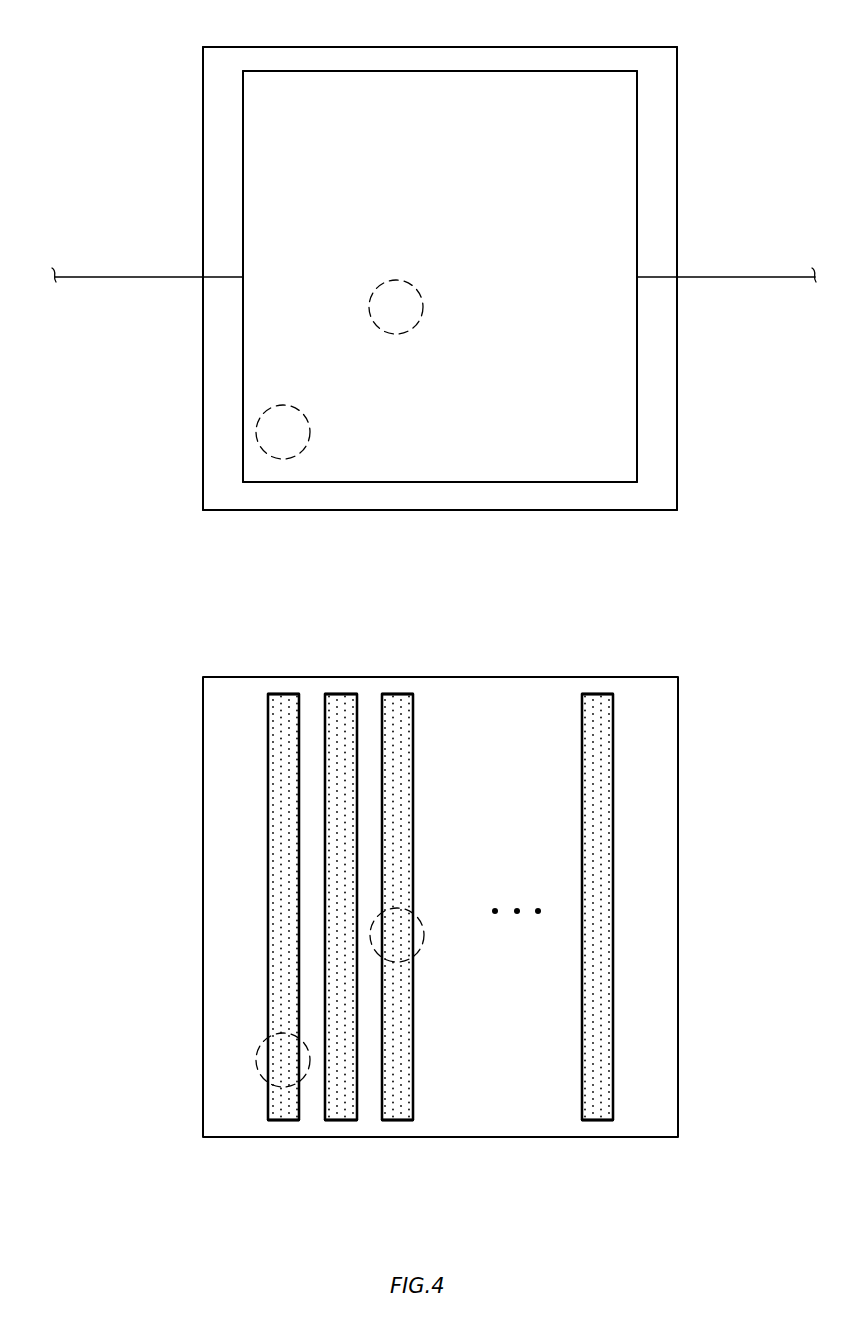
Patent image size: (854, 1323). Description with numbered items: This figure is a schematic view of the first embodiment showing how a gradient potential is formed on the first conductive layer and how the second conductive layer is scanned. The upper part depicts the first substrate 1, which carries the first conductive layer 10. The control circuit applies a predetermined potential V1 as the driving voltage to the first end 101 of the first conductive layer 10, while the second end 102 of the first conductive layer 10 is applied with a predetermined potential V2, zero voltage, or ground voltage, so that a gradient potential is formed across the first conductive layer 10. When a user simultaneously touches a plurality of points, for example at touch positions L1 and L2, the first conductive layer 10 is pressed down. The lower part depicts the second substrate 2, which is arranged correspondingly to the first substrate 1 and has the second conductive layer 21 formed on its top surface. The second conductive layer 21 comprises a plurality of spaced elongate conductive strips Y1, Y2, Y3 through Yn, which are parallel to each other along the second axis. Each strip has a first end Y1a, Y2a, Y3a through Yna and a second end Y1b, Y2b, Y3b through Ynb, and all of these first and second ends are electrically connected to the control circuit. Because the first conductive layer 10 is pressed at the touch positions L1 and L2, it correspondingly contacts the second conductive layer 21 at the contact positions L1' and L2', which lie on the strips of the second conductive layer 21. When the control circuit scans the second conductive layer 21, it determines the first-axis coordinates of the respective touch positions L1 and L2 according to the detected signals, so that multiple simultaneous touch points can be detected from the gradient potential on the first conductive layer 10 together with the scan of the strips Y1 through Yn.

The first substrate 1 is at (660, 62).
The first conductive layer 10 is at (441, 86).
The first end of the first conductive layer 101 is at (637, 168).
The second end of the first conductive layer 102 is at (243, 167).
The predetermined potential V1 is at (751, 277).
The predetermined potential V2 is at (116, 277).
The touch position L1 is at (206, 432).
The touch position L2 is at (262, 307).
The second substrate 2 is at (660, 693).
The second conductive layer 21 is at (617, 763).
The elongate conductive strip Y1 is at (283, 730).
The elongate conductive strip Y2 is at (340, 772).
The elongate conductive strip Y3 is at (397, 810).
The elongate conductive strip Yn is at (597, 822).
The first end of elongate conductive strip Y1a is at (282, 694).
The first end of elongate conductive strip Y2a is at (338, 694).
The first end of elongate conductive strip Y3a is at (395, 694).
The first end of elongate conductive strip Yna is at (595, 694).
The second end of elongate conductive strip Y1b is at (282, 1120).
The second end of elongate conductive strip Y2b is at (338, 1120).
The second end of elongate conductive strip Y3b is at (395, 1120).
The second end of elongate conductive strip Ynb is at (595, 1120).
The contact position L1' is at (217, 1060).
The contact position L2' is at (260, 935).